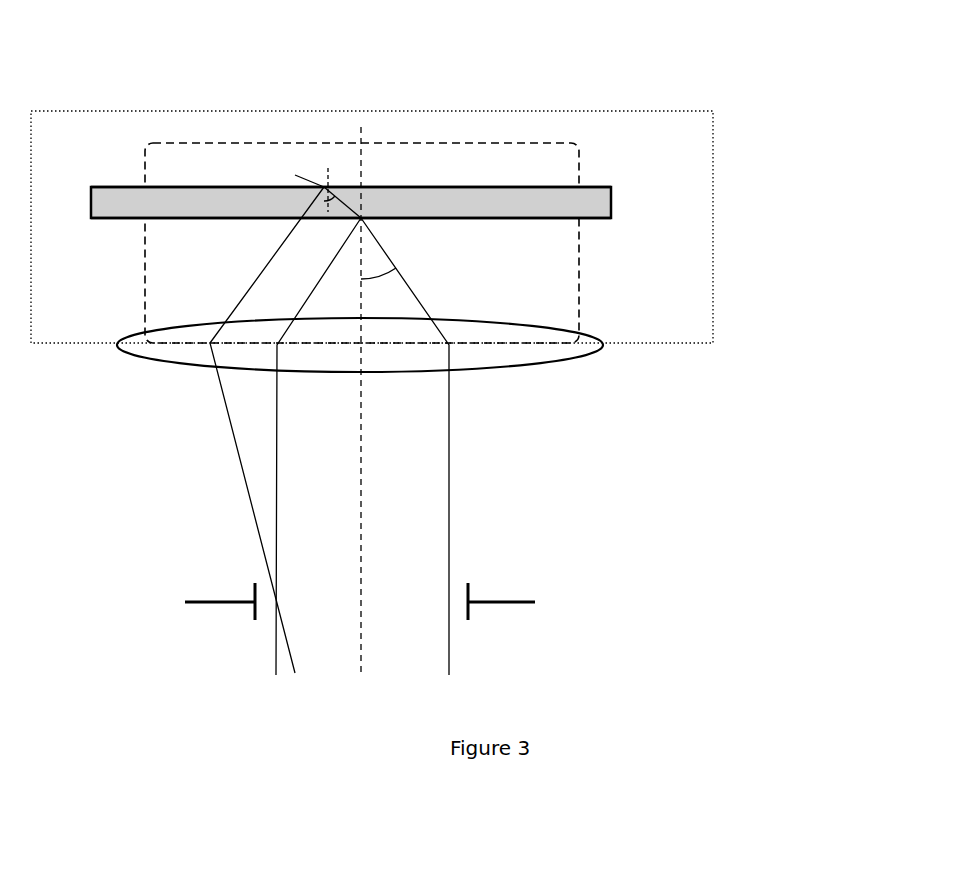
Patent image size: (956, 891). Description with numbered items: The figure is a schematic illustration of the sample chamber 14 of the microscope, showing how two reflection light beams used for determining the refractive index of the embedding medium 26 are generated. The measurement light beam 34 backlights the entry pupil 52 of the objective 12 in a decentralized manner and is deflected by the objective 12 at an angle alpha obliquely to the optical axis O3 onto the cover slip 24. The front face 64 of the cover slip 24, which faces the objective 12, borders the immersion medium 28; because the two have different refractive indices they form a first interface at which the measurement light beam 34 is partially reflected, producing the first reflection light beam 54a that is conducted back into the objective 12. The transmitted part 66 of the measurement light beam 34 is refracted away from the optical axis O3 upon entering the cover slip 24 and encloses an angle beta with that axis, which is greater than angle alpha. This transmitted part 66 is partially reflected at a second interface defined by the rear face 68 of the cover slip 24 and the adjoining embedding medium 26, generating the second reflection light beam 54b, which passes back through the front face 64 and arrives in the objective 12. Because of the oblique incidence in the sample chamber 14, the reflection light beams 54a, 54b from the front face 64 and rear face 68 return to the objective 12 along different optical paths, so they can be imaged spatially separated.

The sample chamber 14 is at (666, 111).
The embedding medium 26 is at (145, 158).
The immersion medium 28 is at (143, 250).
The cover slip 24 is at (593, 198).
The rear face 68 is at (572, 187).
The front face 64 is at (565, 219).
The transmitted part 66 is at (353, 209).
The objective 12 is at (603, 347).
The optical axis O3 is at (363, 662).
The second reflection light beam 54b is at (318, 199).
The first reflection light beam 54a is at (322, 272).
The measurement light beam 34 is at (432, 312).
The entry pupil 52 is at (485, 596).